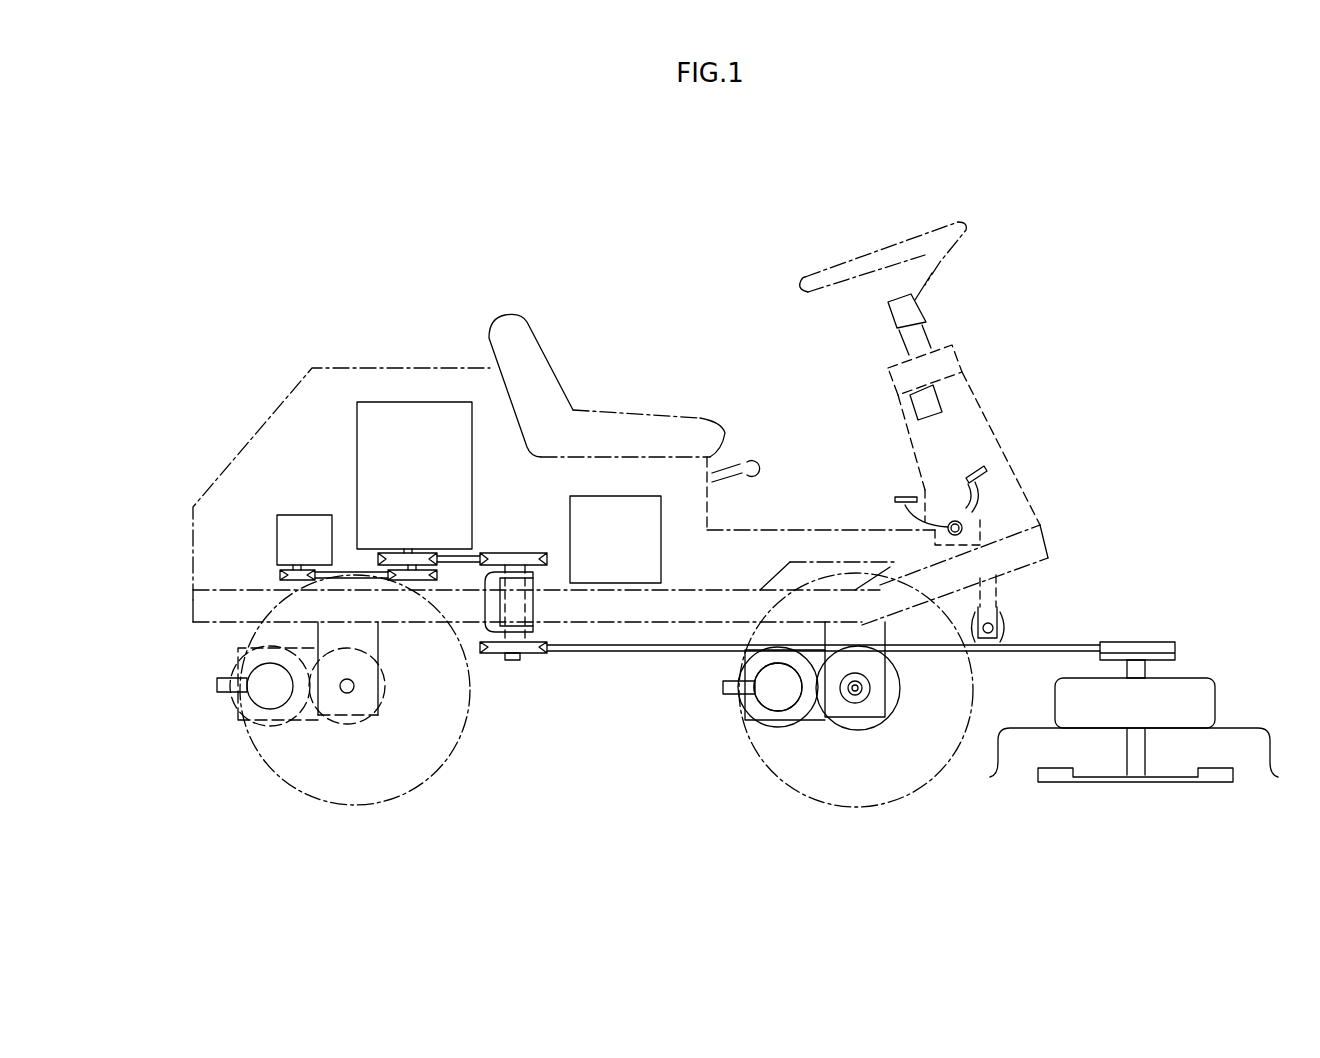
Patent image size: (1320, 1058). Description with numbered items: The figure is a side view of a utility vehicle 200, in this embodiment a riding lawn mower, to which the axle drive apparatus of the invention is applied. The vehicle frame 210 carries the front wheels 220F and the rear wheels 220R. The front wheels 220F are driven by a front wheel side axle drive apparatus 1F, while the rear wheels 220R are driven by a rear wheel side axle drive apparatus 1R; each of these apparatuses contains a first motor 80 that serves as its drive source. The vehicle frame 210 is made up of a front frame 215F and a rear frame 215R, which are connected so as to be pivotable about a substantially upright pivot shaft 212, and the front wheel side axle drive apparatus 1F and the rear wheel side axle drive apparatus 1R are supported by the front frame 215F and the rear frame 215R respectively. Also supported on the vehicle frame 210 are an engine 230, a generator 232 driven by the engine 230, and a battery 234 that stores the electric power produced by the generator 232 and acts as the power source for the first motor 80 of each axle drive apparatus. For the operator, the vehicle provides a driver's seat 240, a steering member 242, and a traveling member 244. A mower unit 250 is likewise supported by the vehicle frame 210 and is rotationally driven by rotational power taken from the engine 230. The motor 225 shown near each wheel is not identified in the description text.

The rear wheel side axle drive apparatus 1R is at (308, 732).
The front wheel side axle drive apparatus 1F is at (832, 747).
The first motor 80 is at (775, 695).
The utility vehicle 200 is at (1055, 292).
The vehicle frame 210 is at (1058, 518).
The pivot shaft 212 is at (512, 658).
The rear frame 215R is at (212, 612).
The front frame 215F is at (1060, 553).
The rear wheels 220R is at (445, 772).
The front wheels 220F is at (918, 798).
The electric motor 225 is at (348, 694).
The engine 230 is at (402, 412).
The generator 232 is at (293, 525).
The battery 234 is at (573, 533).
The driver's seat 240 is at (640, 410).
The steering member 242 is at (868, 245).
The traveling member 244 is at (945, 493).
The mower unit 250 is at (1250, 712).